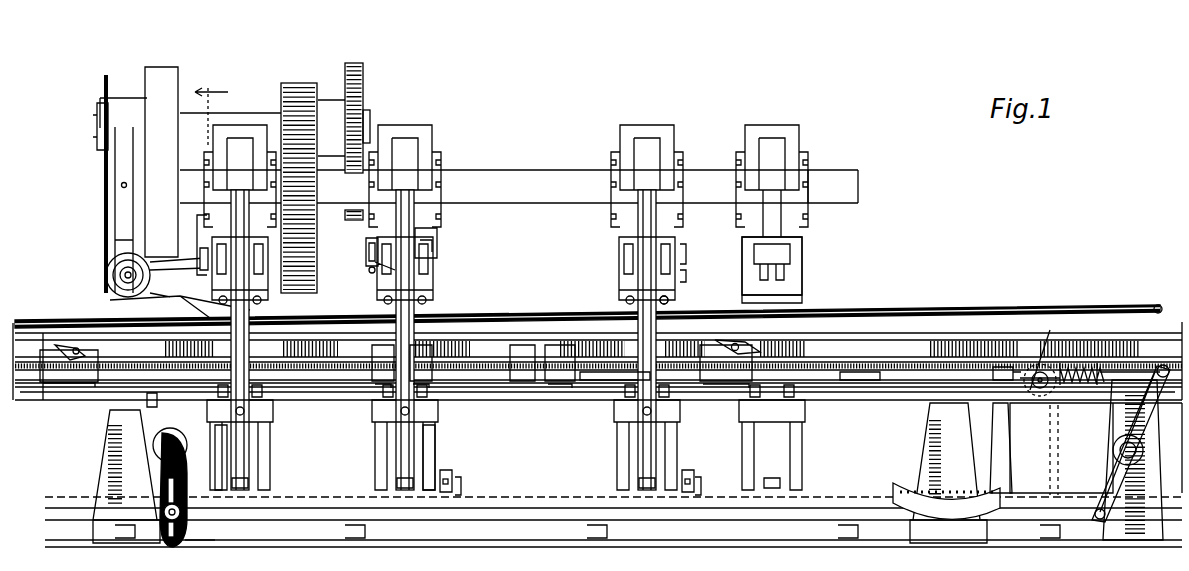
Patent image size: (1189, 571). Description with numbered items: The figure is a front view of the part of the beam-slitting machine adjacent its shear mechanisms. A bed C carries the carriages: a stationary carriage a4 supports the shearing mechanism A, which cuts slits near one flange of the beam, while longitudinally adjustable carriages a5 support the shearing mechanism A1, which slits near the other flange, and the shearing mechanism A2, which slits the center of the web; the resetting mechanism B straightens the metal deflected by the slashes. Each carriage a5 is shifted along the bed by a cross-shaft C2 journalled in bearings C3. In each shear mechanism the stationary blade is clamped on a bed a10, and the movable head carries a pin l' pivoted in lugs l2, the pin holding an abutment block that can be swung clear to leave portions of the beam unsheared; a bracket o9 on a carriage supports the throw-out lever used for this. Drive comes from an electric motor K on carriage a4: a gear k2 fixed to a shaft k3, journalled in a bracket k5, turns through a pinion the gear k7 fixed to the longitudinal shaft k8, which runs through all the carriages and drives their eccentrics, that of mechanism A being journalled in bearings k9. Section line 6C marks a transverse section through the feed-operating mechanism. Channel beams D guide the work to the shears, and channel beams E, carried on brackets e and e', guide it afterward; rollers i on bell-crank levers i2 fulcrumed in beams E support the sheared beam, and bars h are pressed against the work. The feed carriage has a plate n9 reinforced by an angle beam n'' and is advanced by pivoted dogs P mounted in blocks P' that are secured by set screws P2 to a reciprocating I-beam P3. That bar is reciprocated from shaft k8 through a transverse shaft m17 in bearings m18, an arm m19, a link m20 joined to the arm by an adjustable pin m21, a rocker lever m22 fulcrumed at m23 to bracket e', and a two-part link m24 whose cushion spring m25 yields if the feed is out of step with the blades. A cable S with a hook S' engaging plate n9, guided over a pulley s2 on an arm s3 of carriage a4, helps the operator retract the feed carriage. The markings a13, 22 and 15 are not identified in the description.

The bracket k5 is at (96, 110).
The section line 6C is at (211, 106).
The shearing mechanism A is at (239, 121).
The shaft k3 is at (278, 106).
The gear k2 is at (364, 84).
The shearing mechanism A1 is at (441, 123).
The longitudinally extending shaft k8 is at (575, 162).
The shearing mechanism A2 is at (650, 124).
The resetting mechanism B is at (800, 123).
The electric motor K is at (114, 184).
The gear k7 is at (308, 243).
The bracket o9 is at (438, 237).
The bed a10 is at (693, 410).
The lugs l2 is at (679, 246).
The pin l' is at (689, 267).
The bolt a13 is at (670, 293).
The bearings k9 is at (804, 230).
The cable S is at (587, 301).
The hook S' is at (1151, 299).
The pulley s2 is at (110, 281).
The arm s3 is at (130, 316).
The plate n9 is at (486, 328).
The angle beam n'' is at (598, 345).
The bar h is at (838, 375).
The pivoted dog P is at (315, 390).
The block P' is at (447, 382).
The set screw P2 is at (545, 393).
The I-beam P3 is at (512, 386).
The channel beams D is at (52, 393).
The bearings m18 is at (188, 428).
The transverse shaft m17 is at (165, 446).
The arm m19 is at (165, 480).
The link m20 is at (290, 520).
The pivot pin m21 is at (168, 541).
The motion arrow 22 is at (200, 559).
The bed C is at (688, 540).
The cross-shaft C2 is at (454, 482).
The bearings C3 is at (450, 473).
The stationary carriage a4 is at (255, 450).
The adjustable carriage a5 is at (433, 450).
The bracket e is at (961, 473).
The bell-crank levers i2 is at (1008, 413).
The roller i is at (1054, 450).
The channel beams E is at (1098, 395).
The two-part link m24 is at (1110, 370).
The cushion spring m25 is at (1060, 362).
The rocker lever m22 is at (1103, 498).
The fulcrum m23 is at (1113, 452).
The bracket e' is at (1133, 473).
The motion arrow 15 is at (909, 561).